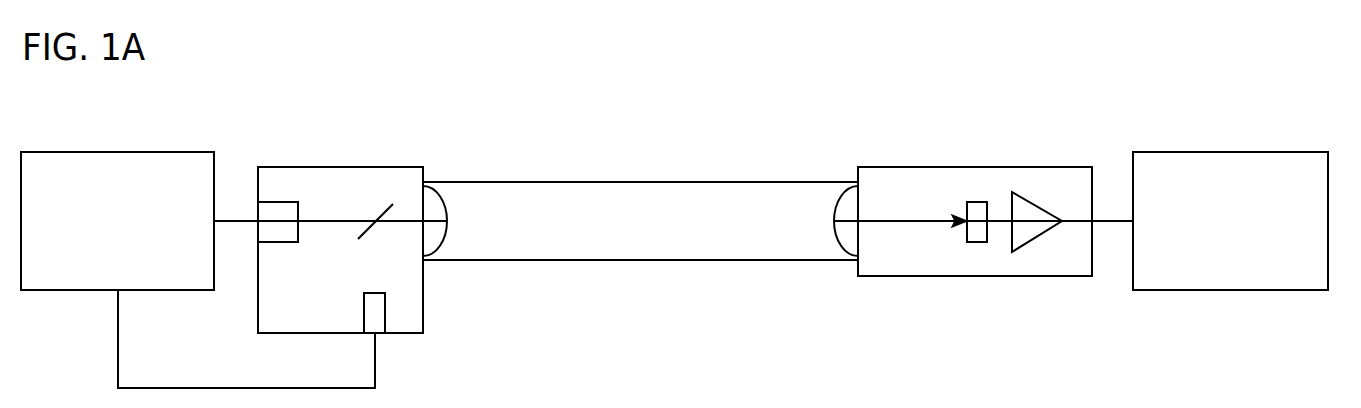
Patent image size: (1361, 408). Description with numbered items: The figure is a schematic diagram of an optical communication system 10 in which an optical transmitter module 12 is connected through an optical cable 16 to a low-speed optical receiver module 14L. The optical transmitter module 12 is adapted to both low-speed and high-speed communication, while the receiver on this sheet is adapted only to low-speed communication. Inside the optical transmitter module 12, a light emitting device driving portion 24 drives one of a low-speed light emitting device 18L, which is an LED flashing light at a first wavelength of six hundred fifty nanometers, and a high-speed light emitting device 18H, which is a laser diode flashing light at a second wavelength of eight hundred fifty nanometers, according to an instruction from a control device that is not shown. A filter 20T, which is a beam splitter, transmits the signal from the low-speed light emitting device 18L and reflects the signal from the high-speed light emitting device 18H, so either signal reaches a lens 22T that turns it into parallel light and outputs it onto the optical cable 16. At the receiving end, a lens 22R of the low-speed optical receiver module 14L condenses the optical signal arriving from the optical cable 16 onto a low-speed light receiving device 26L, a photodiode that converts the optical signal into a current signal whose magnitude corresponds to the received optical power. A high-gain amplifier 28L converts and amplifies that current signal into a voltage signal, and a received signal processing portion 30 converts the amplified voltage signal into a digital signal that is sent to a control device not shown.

The optical communication system 10 is at (222, 88).
The light emitting device driving portion 24 is at (93, 152).
The optical transmitter module 12 is at (423, 148).
The low-speed light emitting device 18L is at (278, 215).
The filter 20T is at (383, 211).
The high-speed light emitting device 18H is at (378, 313).
The lens 22T is at (443, 235).
The optical cable 16 is at (682, 181).
The lens 22R is at (838, 235).
The low-speed optical receiver module 14L is at (1229, 128).
The low-speed light receiving device 26L is at (977, 202).
The high-gain amplifier 28L is at (1029, 198).
The received signal processing portion 30 is at (1173, 152).